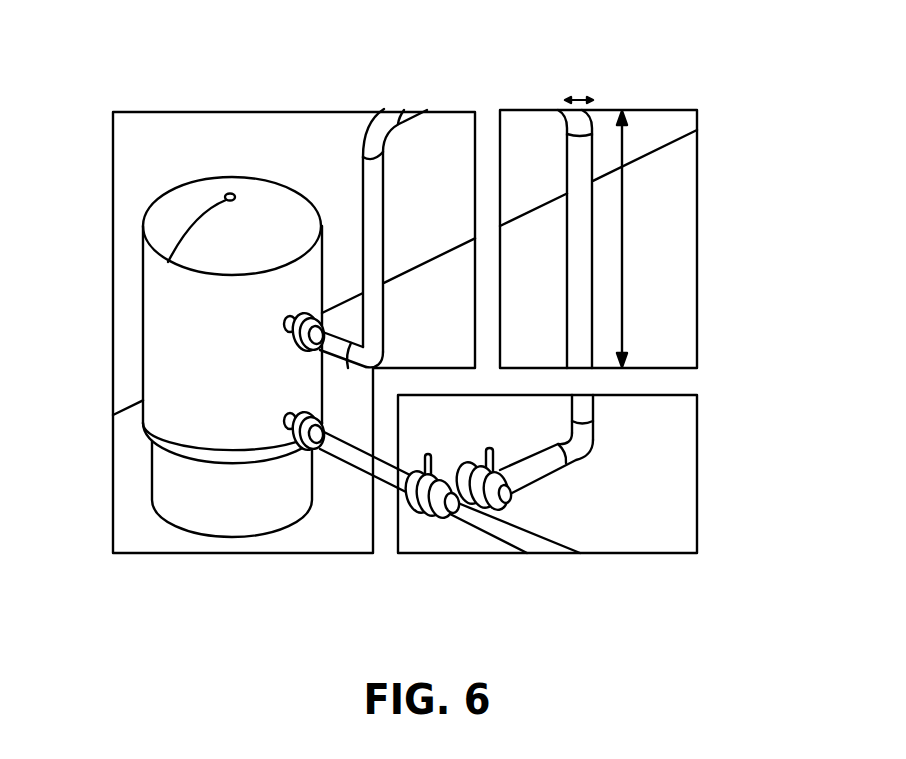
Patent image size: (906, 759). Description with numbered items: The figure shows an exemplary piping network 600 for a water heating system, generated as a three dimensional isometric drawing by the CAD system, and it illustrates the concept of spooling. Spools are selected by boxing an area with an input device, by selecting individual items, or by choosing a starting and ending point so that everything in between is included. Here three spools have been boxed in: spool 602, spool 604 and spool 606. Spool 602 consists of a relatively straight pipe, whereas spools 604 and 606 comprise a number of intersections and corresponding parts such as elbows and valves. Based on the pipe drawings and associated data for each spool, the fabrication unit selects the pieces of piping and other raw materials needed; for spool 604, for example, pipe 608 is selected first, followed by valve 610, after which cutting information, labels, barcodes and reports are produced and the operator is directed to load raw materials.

The piping network 600 is at (403, 316).
The spool 602 is at (698, 222).
The spool 604 is at (578, 505).
The spool 606 is at (113, 370).
The pipe 608 is at (506, 533).
The valve 610 is at (437, 520).